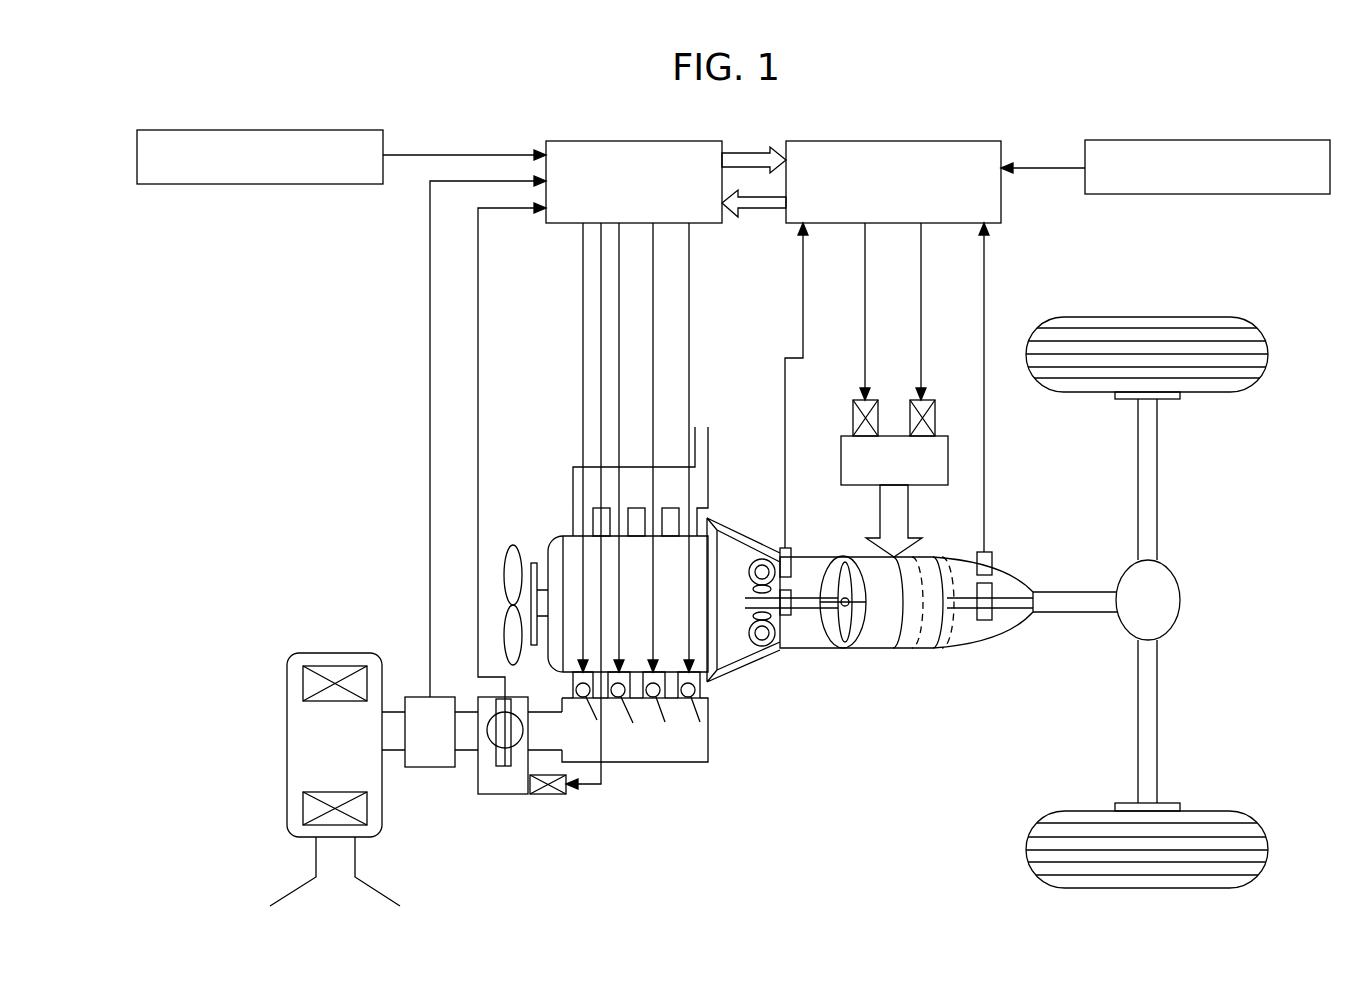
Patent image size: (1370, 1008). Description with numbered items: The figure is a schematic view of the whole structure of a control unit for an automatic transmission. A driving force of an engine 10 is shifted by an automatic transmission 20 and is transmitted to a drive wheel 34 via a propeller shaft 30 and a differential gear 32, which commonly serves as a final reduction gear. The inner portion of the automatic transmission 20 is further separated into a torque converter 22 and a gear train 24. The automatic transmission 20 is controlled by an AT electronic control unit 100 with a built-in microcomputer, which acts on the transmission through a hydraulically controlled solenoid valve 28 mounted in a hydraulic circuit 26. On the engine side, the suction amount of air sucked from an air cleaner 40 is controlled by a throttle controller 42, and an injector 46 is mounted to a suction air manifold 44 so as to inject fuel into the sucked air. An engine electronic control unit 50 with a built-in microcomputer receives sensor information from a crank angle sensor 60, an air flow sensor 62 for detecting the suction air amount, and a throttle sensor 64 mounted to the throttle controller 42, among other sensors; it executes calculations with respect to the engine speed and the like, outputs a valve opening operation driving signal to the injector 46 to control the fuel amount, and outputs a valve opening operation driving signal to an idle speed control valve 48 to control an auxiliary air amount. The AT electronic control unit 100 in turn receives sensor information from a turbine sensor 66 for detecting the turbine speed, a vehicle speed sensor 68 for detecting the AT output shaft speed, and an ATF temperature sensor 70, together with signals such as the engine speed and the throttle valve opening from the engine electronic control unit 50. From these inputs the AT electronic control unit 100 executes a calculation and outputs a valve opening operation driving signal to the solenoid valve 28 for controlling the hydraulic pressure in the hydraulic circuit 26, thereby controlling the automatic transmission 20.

The engine 10 is at (707, 681).
The automatic transmission 20 is at (812, 650).
The torque converter 22 is at (762, 656).
The gear train 24 is at (873, 650).
The hydraulic circuit 26 is at (860, 487).
The solenoid valve 28 is at (870, 398).
The propeller shaft 30 is at (1072, 612).
The differential gear 32 is at (1180, 598).
The drive wheel 34 is at (1268, 352).
The air cleaner 40 is at (335, 653).
The throttle controller 42 is at (505, 795).
The suction air manifold 44 is at (650, 763).
The injector 46 is at (581, 698).
The idle speed control valve 48 is at (550, 795).
The engine electronic control unit 50 is at (639, 141).
The crank angle sensor 60 is at (262, 130).
The air flow sensor 62 is at (427, 768).
The throttle sensor 64 is at (493, 759).
The turbine sensor 66 is at (780, 548).
The vehicle speed sensor 68 is at (992, 562).
The ATF temperature sensor 70 is at (1209, 140).
The AT electronic control unit 100 is at (898, 141).